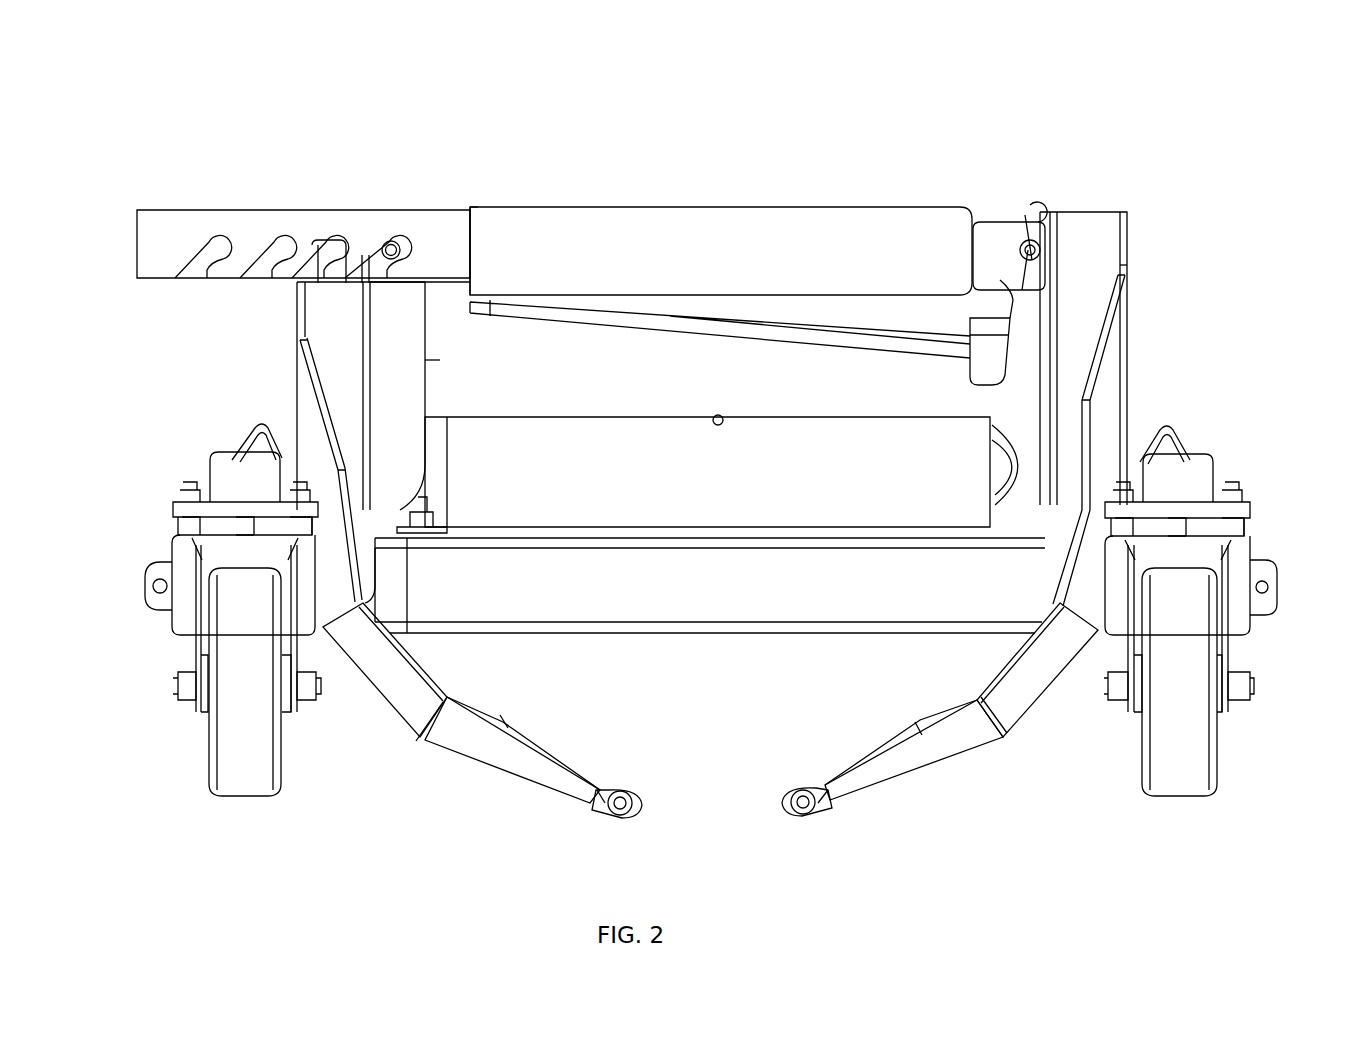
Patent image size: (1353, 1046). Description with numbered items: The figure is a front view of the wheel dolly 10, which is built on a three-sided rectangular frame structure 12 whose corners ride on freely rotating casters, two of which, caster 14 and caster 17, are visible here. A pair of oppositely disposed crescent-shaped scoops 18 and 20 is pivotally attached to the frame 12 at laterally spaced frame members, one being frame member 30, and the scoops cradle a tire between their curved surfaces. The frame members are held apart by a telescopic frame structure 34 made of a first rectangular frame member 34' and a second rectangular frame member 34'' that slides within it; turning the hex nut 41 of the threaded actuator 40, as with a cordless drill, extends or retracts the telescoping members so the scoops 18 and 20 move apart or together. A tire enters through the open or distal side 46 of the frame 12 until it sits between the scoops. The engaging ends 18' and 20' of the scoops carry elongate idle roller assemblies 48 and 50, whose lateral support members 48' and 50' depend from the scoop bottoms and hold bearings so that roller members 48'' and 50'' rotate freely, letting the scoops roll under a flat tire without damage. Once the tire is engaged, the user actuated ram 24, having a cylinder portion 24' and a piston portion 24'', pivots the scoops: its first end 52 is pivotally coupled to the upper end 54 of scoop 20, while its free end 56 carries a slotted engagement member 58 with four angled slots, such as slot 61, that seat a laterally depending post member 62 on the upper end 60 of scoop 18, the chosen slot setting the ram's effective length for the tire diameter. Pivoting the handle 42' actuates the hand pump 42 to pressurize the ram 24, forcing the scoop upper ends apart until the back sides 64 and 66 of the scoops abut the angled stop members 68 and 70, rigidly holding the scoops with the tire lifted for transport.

The wheel dolly 10 is at (1115, 172).
The frame structure 12 is at (680, 633).
The caster 14 is at (280, 780).
The caster 17 is at (1172, 785).
The tire support structure or scoop 18 is at (461, 715).
The engaging end of scoop 18' is at (543, 739).
The tire support structure or scoop 20 is at (961, 714).
The engaging end of scoop 20' is at (890, 729).
The ram 24 is at (786, 210).
The cylinder portion 24' is at (694, 210).
The piston portion 24'' is at (454, 164).
The frame member 30 is at (182, 556).
The telescopic frame structure 34 is at (708, 650).
The first rectangular frame member 34' is at (710, 550).
The second rectangular frame member 34'' is at (437, 612).
The threaded actuator 40 is at (1266, 548).
The hex nut 41 is at (1240, 620).
The hand pump 42 is at (721, 440).
The handle 42' is at (741, 338).
The open or distal side 46 is at (312, 625).
The idle roller assembly 48 is at (596, 845).
The lateral support member 48' is at (578, 839).
The roller member 48'' is at (642, 763).
The idle roller assembly 50 is at (812, 845).
The lateral support member 50' is at (844, 836).
The roller member 50'' is at (799, 753).
The first end of ram 52 is at (1008, 213).
The upper end of scoop 20 54 is at (1088, 213).
The free end of ram 56 is at (195, 210).
The slotted engagement member 58 is at (292, 210).
The upper end of scoop 18 60 is at (415, 315).
The slot 61 is at (190, 265).
The post member 62 is at (386, 238).
The back side of scoop 18 64 is at (300, 365).
The back side of scoop 20 66 is at (1130, 392).
The angled stop member 68 is at (258, 428).
The angled stop member 70 is at (1168, 440).